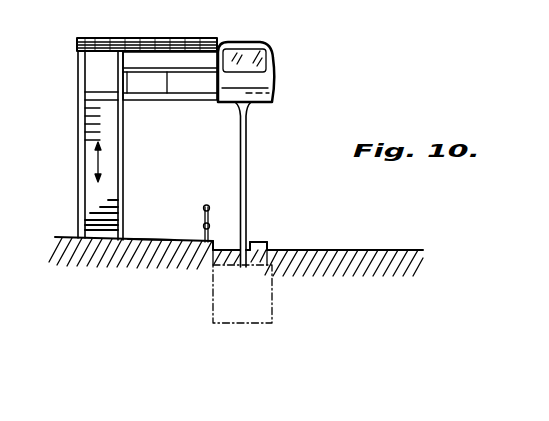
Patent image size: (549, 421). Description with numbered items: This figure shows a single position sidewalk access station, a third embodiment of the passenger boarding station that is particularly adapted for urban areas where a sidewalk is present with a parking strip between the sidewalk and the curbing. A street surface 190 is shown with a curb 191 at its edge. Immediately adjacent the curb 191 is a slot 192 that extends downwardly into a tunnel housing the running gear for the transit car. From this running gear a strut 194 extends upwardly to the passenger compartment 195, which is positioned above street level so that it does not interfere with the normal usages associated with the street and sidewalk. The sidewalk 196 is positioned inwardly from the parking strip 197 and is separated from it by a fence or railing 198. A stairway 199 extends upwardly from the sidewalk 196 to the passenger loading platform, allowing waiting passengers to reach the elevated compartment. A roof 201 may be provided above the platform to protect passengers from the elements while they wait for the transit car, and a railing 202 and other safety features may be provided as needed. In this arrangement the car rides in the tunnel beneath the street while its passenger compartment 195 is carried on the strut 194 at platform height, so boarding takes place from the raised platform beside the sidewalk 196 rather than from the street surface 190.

The street surface 190 is at (372, 249).
The curb 191 is at (262, 244).
The slot 192 is at (235, 266).
The strut 194 is at (247, 147).
The passenger compartment 195 is at (270, 85).
The sidewalk 196 is at (147, 239).
The parking strip 197 is at (223, 246).
The fence or railing 198 is at (204, 212).
The stairway 199 is at (84, 113).
The roof 201 is at (197, 24).
The railing 202 is at (157, 73).